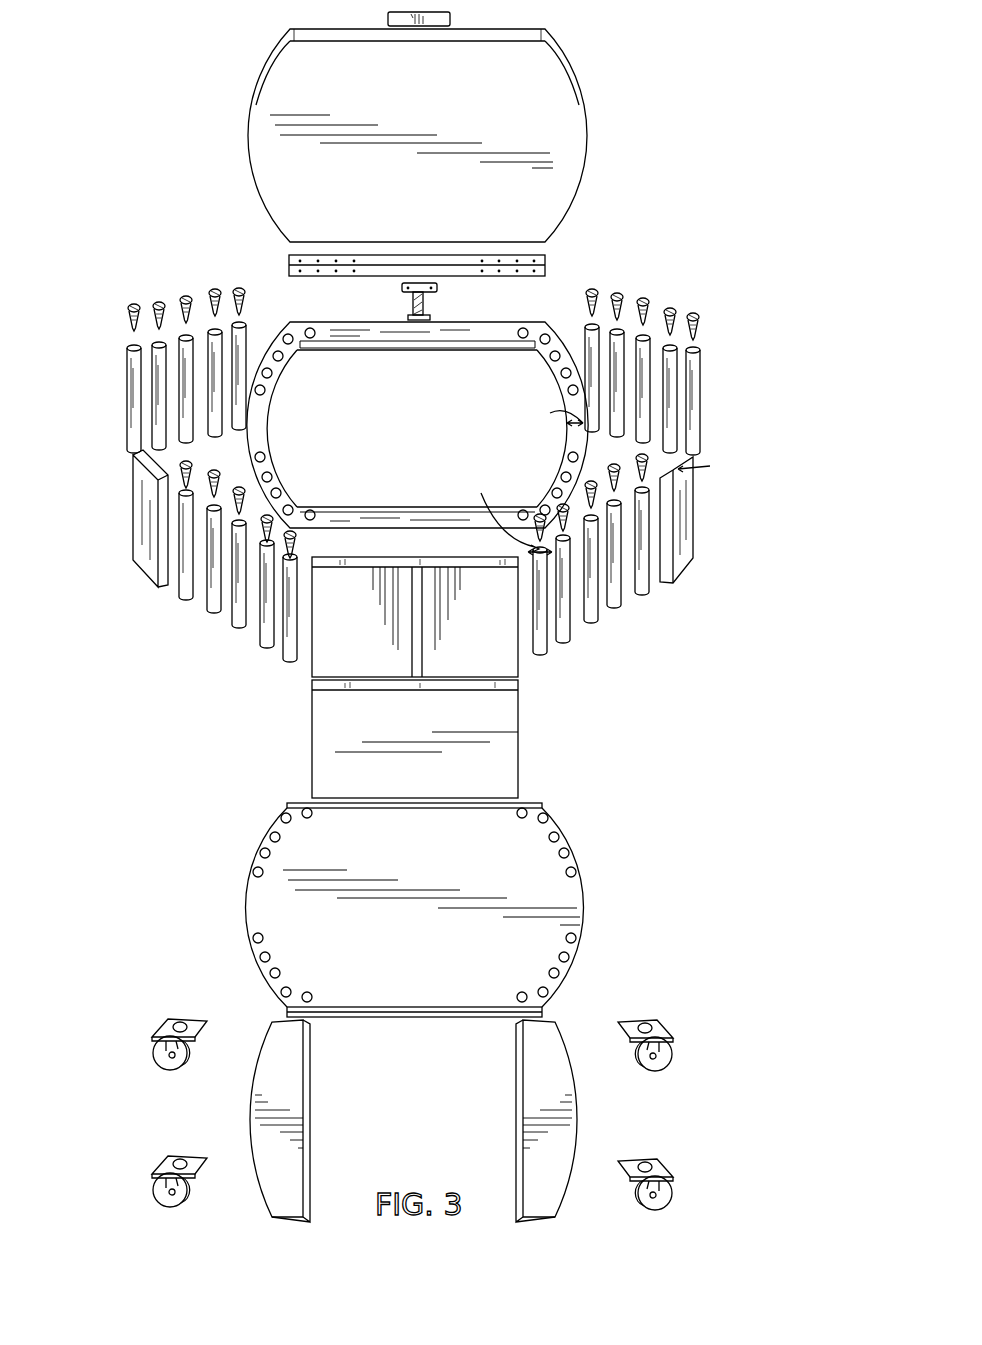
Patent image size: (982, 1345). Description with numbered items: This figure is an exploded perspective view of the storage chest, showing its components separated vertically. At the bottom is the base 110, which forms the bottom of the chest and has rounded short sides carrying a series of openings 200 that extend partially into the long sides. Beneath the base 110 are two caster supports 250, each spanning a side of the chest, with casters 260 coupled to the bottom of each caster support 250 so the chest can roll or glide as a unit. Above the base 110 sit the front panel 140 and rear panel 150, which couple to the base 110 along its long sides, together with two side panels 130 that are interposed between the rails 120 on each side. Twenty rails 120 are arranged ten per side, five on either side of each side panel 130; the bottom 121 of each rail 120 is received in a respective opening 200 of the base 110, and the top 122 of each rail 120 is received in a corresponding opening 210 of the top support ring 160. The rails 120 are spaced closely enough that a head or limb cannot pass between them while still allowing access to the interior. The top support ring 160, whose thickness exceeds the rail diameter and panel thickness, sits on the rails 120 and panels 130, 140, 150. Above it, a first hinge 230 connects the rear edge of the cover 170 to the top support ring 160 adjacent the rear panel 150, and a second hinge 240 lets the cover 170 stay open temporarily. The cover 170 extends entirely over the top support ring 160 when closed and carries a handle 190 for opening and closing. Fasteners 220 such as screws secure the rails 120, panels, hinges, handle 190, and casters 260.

The base 110 is at (434, 964).
The rails 120 is at (386, 506).
The bottom of rail 121 is at (150, 610).
The top of rail 122 is at (178, 507).
The side panel 130 is at (140, 545).
The front panel 140 is at (434, 786).
The rear panel 150 is at (492, 652).
The top support ring 160 is at (418, 517).
The cover 170 is at (548, 100).
The handle 190 is at (449, 22).
The openings 200 is at (253, 872).
The openings 210 is at (300, 350).
The fasteners 220 is at (130, 311).
The first hinge 230 is at (546, 259).
The second hinge 240 is at (424, 306).
The caster support 250 is at (293, 1078).
The casters 260 is at (162, 1027).